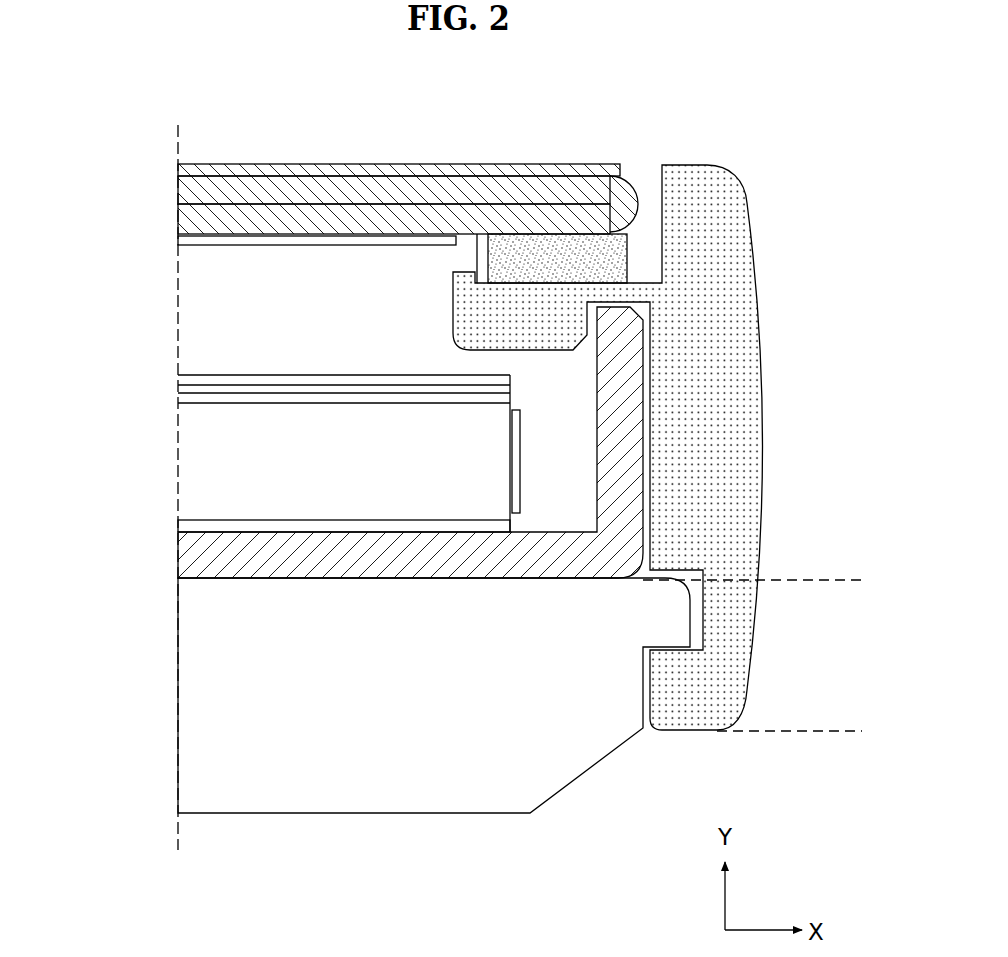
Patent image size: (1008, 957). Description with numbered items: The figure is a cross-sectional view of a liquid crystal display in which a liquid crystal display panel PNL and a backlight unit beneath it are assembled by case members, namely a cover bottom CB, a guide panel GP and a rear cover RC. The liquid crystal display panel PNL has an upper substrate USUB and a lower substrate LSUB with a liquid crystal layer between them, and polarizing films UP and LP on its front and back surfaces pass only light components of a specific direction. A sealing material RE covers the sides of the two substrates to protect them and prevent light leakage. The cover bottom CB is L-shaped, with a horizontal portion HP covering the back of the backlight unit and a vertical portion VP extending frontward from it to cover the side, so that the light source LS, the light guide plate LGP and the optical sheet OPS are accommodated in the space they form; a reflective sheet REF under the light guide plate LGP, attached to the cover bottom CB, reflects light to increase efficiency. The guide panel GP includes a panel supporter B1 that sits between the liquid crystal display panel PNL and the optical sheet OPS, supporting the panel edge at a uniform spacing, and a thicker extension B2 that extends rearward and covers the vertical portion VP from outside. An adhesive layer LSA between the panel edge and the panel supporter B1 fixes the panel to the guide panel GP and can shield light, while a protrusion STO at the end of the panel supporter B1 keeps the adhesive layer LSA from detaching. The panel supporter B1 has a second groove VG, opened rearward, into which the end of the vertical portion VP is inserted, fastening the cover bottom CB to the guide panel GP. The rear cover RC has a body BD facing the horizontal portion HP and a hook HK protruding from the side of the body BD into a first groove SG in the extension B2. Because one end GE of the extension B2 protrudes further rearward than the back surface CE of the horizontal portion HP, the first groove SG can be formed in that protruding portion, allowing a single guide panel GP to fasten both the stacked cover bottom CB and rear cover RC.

The liquid crystal display panel PNL is at (82, 150).
The polarizing film UP is at (183, 170).
The upper substrate USUB is at (186, 198).
The lower substrate LSUB is at (186, 226).
The polarizing film LP is at (186, 240).
The sealing material RE is at (628, 190).
The adhesive layer LSA is at (551, 250).
The protrusion STO is at (468, 270).
The guide panel GP is at (840, 320).
The panel supporter B1 is at (557, 330).
The extension B2 is at (740, 386).
The second groove VG is at (655, 302).
The cover bottom CB is at (840, 430).
The vertical portion VP is at (622, 437).
The horizontal portion HP is at (542, 545).
The optical sheet OPS is at (160, 375).
The light guide plate LGP is at (186, 482).
The light source LS is at (516, 446).
The reflective sheet REF is at (186, 526).
The rear cover RC is at (840, 625).
The hook HK is at (677, 630).
The body BD is at (620, 690).
The first groove SG is at (697, 608).
The back surface CE is at (768, 580).
The one end of the extension GE is at (805, 732).